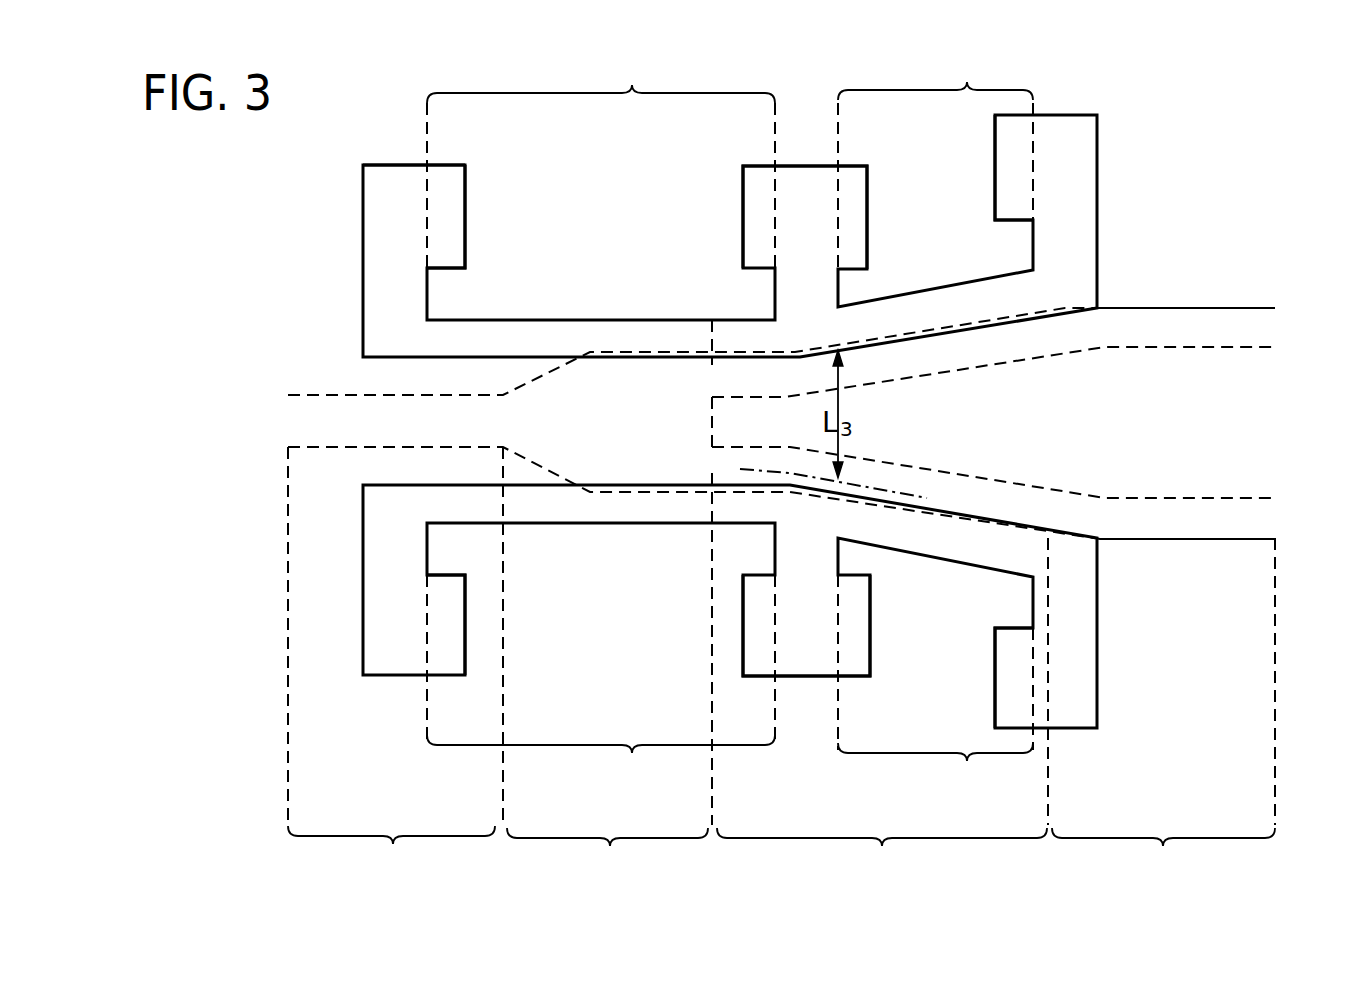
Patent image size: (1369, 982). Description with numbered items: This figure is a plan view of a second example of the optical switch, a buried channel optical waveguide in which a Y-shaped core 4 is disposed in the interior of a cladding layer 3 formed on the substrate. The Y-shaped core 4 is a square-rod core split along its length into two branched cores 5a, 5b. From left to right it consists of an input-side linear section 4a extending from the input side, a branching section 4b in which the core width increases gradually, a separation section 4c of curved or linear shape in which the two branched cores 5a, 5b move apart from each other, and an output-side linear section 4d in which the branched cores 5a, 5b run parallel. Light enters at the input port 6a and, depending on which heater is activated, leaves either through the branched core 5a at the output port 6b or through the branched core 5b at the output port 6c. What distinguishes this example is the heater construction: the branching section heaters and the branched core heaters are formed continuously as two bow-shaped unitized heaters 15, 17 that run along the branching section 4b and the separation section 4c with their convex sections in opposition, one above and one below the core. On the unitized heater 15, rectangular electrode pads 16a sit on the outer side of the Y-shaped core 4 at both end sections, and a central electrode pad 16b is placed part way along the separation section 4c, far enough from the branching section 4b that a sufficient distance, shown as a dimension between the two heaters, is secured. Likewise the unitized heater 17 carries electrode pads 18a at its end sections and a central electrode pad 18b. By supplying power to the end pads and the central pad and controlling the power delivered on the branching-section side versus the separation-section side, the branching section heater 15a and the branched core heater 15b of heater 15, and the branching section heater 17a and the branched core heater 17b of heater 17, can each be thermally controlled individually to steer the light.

The cladding layer 3 is at (1242, 192).
The Y-shaped core 4 is at (1195, 310).
The input-side linear section 4a is at (395, 665).
The branching section 4b is at (609, 602).
The separation section 4c is at (882, 711).
The output-side linear section 4d is at (1163, 712).
The branched core 5a is at (1246, 322).
The branched core 5b is at (1231, 527).
The input port 6a is at (315, 425).
The output port 6b is at (1255, 331).
The output port 6c is at (1252, 522).
The unitized heater 15 is at (363, 221).
The branching section heater 15a is at (601, 184).
The branched core heater 15b is at (935, 178).
The electrode pad 16a is at (458, 207).
The electrode pad 16b is at (852, 208).
The unitized heater 17 is at (363, 622).
The branching section heater 17a is at (601, 686).
The branched core heater 17b is at (935, 690).
The electrode pad 18a is at (458, 633).
The electrode pad 18b is at (855, 633).